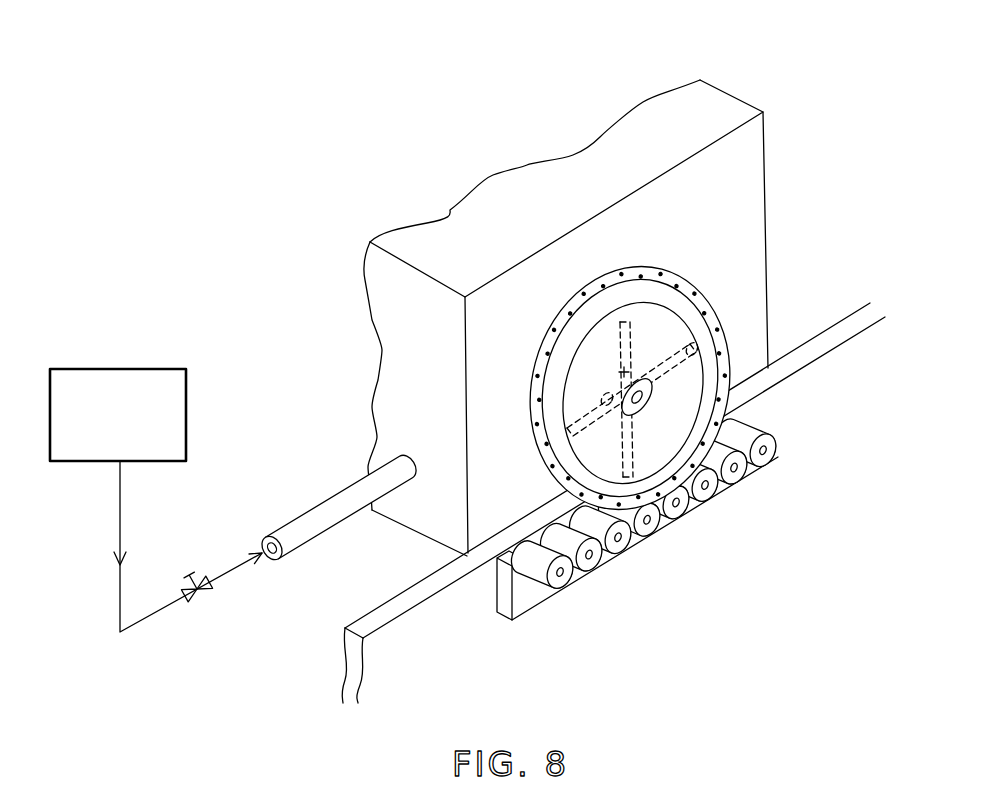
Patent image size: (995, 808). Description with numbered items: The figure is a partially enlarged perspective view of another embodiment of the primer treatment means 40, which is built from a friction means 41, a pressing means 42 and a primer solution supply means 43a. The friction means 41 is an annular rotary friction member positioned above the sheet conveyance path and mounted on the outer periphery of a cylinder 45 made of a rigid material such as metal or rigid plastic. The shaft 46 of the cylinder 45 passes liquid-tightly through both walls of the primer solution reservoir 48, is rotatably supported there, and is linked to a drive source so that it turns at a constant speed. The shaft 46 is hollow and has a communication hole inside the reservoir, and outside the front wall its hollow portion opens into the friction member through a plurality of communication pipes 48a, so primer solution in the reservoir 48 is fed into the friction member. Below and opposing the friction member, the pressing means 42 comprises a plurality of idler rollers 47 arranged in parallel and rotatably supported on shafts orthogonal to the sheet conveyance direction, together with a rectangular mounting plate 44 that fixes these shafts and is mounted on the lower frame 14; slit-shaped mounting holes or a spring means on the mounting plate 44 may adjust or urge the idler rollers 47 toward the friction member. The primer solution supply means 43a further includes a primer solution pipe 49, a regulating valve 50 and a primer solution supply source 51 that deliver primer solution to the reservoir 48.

The primer treatment means 40 is at (613, 351).
The primer solution reservoir 48 is at (748, 164).
The communication pipe 48a is at (676, 364).
The friction means 41 is at (620, 298).
The cylinder 45 is at (601, 375).
The shaft 46 is at (651, 395).
The idler roller 47 is at (765, 431).
The pressing means 42 is at (688, 537).
The mounting plate 44 is at (523, 612).
The lower frame 14 is at (418, 617).
The primer solution supply means 43a is at (330, 426).
The primer solution pipe 49 is at (337, 498).
The regulating valve 50 is at (205, 602).
The primer solution supply source 51 is at (156, 500).